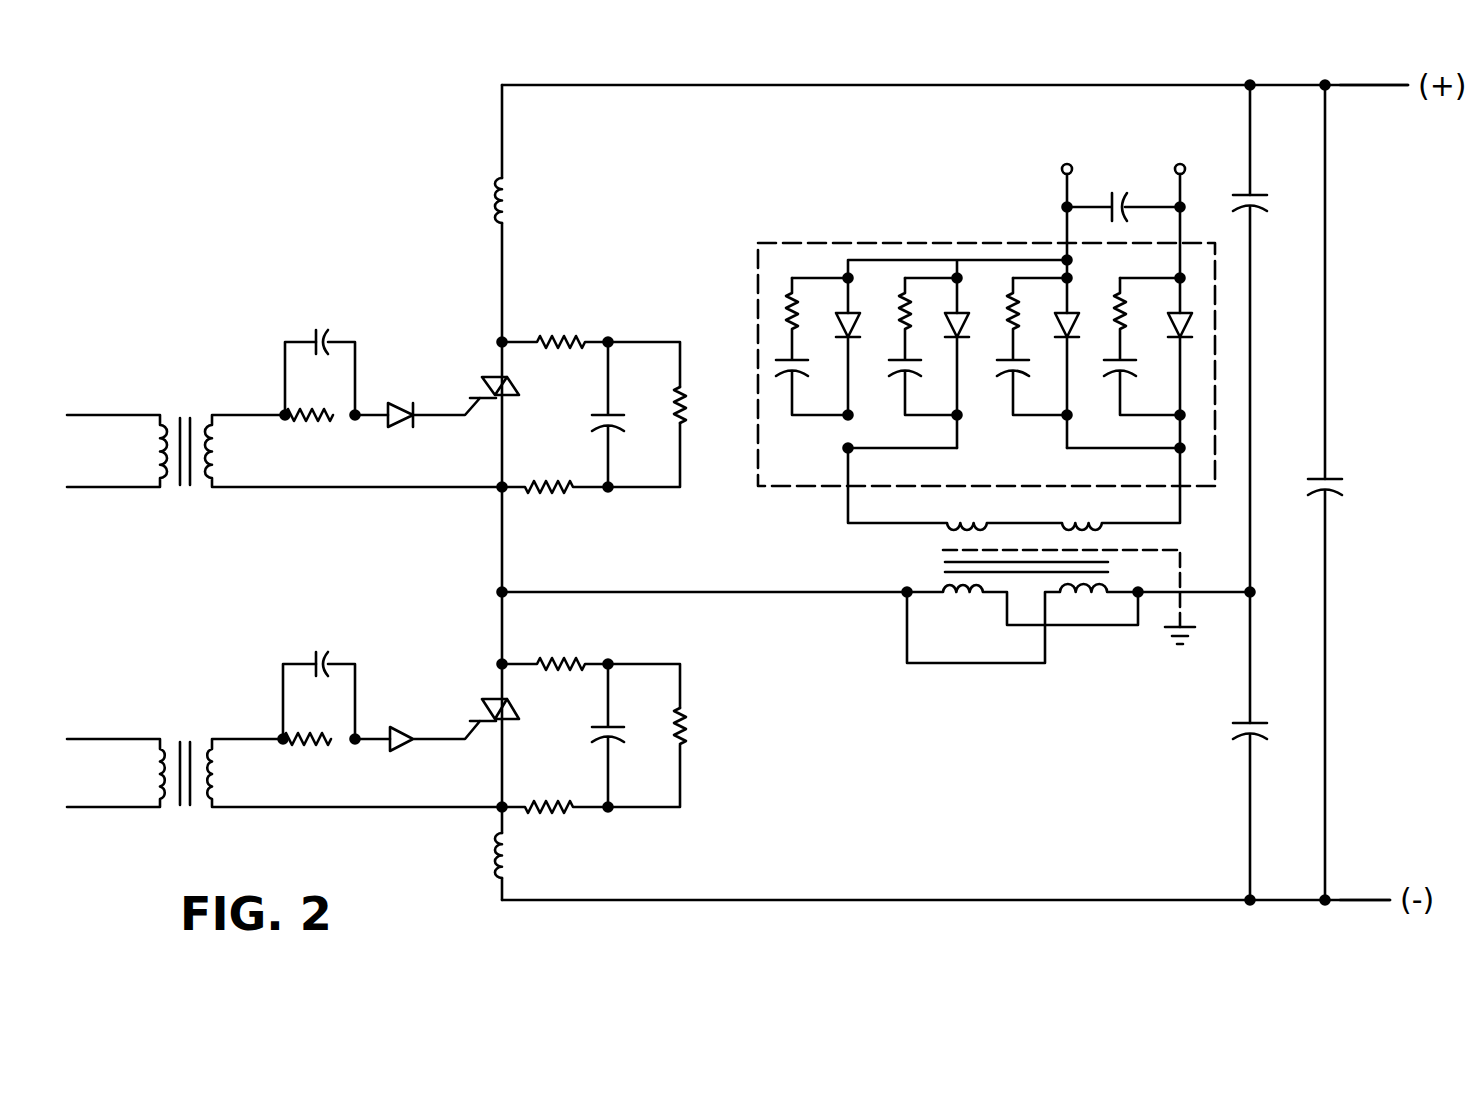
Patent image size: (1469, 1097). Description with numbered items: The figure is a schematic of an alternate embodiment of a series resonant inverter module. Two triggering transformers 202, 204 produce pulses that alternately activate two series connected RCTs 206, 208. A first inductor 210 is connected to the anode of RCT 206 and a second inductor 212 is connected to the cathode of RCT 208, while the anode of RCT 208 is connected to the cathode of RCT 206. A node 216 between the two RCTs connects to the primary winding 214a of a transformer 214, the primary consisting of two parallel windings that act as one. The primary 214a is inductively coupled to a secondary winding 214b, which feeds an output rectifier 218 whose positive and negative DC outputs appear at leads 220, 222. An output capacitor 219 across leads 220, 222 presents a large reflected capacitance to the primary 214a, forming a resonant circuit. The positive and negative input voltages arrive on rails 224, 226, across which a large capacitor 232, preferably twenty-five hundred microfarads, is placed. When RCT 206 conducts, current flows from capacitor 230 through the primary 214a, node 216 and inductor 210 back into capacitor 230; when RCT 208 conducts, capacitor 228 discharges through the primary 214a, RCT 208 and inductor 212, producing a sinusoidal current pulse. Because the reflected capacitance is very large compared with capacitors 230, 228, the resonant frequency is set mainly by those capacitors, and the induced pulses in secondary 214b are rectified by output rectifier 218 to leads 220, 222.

The transformer 202 is at (197, 396).
The transformer 204 is at (215, 695).
The RCT 206 is at (486, 377).
The RCT 208 is at (478, 699).
The first inductor 210 is at (492, 205).
The second inductor 212 is at (488, 860).
The transformer 214 is at (1003, 596).
The primary winding 214a is at (973, 587).
The secondary winding 214b is at (945, 530).
The node 216 is at (494, 592).
The output rectifier 218 is at (835, 243).
The output capacitor 219 is at (1106, 198).
The lead 220 is at (1064, 162).
The lead 222 is at (1180, 164).
The rail 224 is at (1392, 93).
The rail 226 is at (1362, 898).
The capacitor 228 is at (1254, 722).
The capacitor 230 is at (1256, 194).
The large capacitor 232 is at (1332, 480).